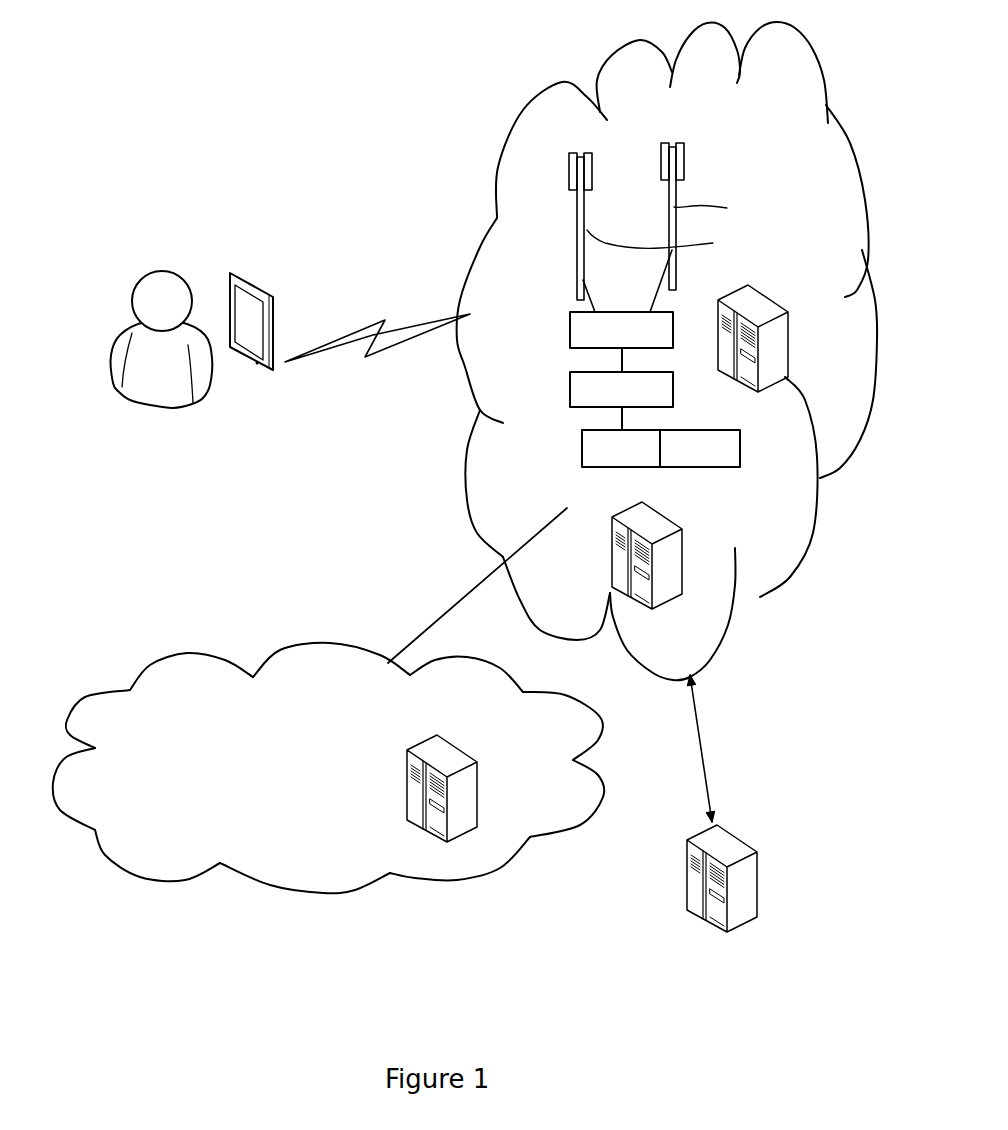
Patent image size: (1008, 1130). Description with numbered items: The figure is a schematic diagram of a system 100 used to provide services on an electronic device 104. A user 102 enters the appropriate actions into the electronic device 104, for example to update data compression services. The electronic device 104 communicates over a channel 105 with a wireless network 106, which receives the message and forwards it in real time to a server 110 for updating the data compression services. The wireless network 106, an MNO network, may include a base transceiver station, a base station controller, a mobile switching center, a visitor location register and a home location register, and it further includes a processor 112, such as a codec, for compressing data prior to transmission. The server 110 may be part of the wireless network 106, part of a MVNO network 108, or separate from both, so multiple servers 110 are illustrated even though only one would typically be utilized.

The system 100 is at (253, 65).
The user 102 is at (165, 388).
The electronic device 104 is at (250, 290).
The channel 105 is at (334, 352).
The wireless network 106 is at (530, 100).
The MVNO network 108 is at (305, 655).
The server 110 is at (658, 506).
The processor 112 is at (753, 338).